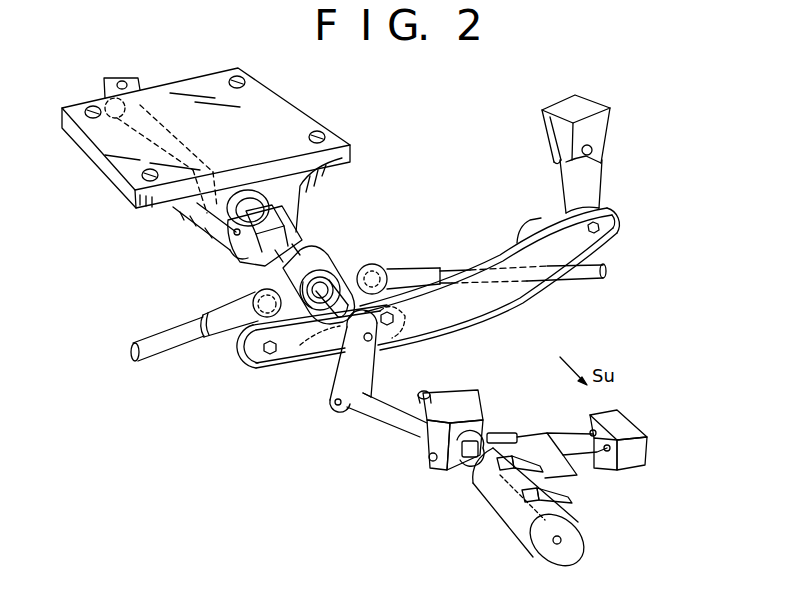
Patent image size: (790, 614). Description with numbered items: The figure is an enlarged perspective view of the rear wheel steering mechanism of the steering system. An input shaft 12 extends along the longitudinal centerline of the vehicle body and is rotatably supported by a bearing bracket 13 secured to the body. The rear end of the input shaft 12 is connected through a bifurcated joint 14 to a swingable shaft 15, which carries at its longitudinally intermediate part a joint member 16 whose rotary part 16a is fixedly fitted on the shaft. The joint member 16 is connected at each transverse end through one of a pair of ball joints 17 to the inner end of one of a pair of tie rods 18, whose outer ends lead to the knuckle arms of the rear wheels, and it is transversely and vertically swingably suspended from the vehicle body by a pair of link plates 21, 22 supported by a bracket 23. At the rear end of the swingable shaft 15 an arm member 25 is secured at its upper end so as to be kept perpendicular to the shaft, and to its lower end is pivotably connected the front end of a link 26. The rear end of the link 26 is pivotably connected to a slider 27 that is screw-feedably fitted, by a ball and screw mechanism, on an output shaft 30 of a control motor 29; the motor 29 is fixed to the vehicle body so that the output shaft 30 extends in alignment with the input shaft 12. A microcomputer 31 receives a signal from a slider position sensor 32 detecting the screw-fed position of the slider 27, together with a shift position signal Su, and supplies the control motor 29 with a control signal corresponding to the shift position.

The input shaft 12 is at (163, 125).
The bearing bracket 13 is at (317, 120).
The bifurcated joint 14 is at (302, 224).
The swingable shaft 15 is at (337, 325).
The joint member 16 is at (320, 255).
The rotary part 16a is at (353, 257).
The ball joint 17 is at (253, 291).
The tie rod 18 is at (163, 354).
The link plate 21 is at (530, 300).
The link plate 22 is at (602, 178).
The bracket 23 is at (610, 117).
The arm member 25 is at (378, 355).
The link 26 is at (387, 430).
The slider 27 is at (460, 407).
The control motor 29 is at (505, 515).
The output shaft 30 is at (477, 467).
The microcomputer 31 is at (633, 418).
The slider position sensor 32 is at (503, 433).